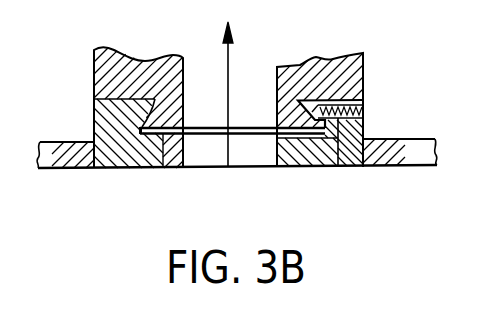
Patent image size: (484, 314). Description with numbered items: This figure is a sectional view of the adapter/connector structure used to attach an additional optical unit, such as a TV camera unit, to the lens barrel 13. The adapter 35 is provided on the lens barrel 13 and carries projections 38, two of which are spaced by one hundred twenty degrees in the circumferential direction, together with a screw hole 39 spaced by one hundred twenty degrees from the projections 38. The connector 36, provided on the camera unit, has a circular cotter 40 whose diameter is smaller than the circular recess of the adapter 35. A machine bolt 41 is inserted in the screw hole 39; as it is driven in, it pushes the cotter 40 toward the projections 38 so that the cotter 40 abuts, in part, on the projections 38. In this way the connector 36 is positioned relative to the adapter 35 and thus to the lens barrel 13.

The lens barrel 13 is at (388, 167).
The adapter 35 is at (122, 154).
The projections 38 is at (118, 118).
The circular cotter 40 is at (167, 166).
The connector 36 is at (366, 57).
The screw hole 39 is at (367, 105).
The machine bolt 41 is at (345, 166).